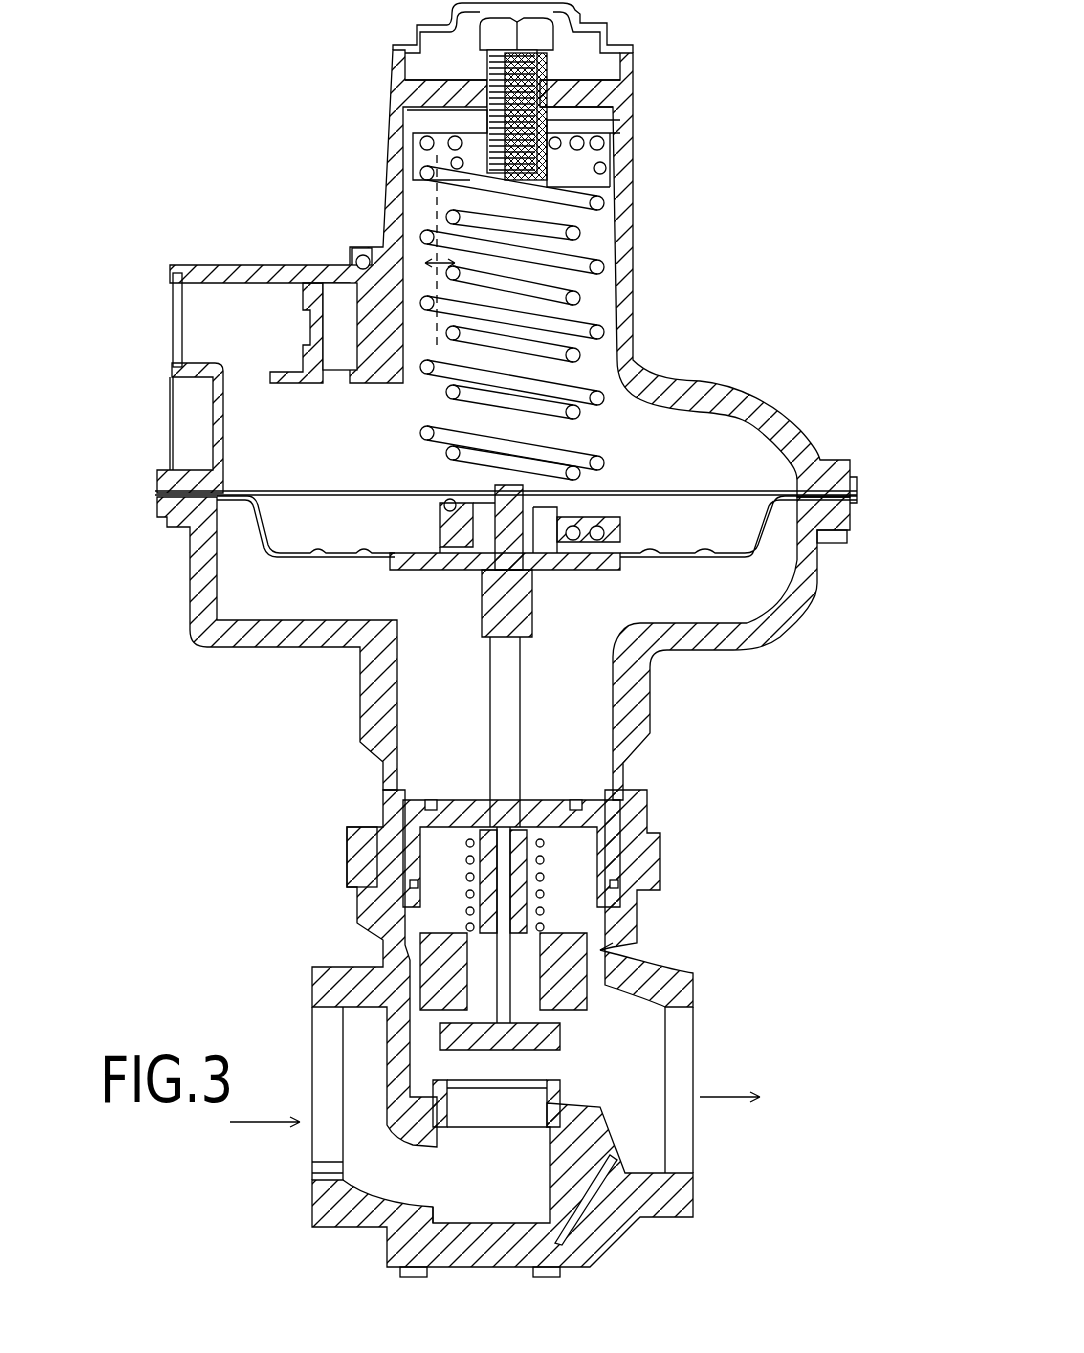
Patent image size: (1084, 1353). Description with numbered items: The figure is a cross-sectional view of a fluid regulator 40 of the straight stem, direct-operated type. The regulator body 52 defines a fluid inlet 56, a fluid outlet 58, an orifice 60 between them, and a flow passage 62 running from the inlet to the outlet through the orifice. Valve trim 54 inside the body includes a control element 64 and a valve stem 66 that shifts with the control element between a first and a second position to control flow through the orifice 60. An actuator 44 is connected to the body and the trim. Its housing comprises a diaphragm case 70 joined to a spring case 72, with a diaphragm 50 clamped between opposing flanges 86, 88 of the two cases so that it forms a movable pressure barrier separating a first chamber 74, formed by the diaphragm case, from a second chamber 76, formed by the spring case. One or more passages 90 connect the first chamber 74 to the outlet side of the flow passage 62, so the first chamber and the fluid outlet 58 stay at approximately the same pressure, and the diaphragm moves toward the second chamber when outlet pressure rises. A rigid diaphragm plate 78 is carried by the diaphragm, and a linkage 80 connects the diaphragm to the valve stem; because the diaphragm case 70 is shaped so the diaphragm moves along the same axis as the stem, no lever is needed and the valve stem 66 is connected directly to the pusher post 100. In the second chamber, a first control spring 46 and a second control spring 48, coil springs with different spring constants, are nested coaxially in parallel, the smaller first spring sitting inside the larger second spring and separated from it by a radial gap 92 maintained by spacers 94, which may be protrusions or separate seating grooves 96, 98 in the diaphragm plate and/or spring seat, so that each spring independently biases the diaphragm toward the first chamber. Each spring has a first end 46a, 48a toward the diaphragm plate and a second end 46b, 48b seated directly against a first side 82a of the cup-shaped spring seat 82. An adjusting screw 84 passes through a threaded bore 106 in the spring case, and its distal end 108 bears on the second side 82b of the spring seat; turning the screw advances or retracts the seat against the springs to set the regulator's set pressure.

The fluid regulator 40 is at (781, 83).
The actuator 44 is at (341, 807).
The first control spring 46 is at (600, 283).
The first end of first control spring 46a is at (600, 490).
The second end of first control spring 46b is at (610, 100).
The second control spring 48 is at (630, 315).
The first end of second control spring 48a is at (620, 510).
The second end of second control spring 48b is at (615, 160).
The diaphragm 50 is at (805, 560).
The regulator body 52 is at (600, 1225).
The valve trim 54 is at (410, 975).
The fluid inlet 56 is at (312, 1027).
The fluid outlet 58 is at (693, 1048).
The orifice 60 is at (540, 1085).
The flow passage 62 is at (520, 1180).
The control element 64 is at (560, 1030).
The valve stem 66 is at (620, 952).
The diaphragm case 70 is at (782, 638).
The spring case 72 is at (735, 381).
The first chamber 74 is at (450, 612).
The second chamber 76 is at (300, 436).
The diaphragm plate 78 is at (620, 527).
The linkage 80 is at (565, 679).
The spring seat 82 is at (407, 115).
The first side of spring seat 82a is at (520, 240).
The second side of spring seat 82b is at (617, 63).
The adjusting screw 84 is at (553, 33).
The flange of diaphragm case 86 is at (850, 530).
The flange of spring case 88 is at (850, 478).
The passages 90 is at (437, 810).
The gap 92 is at (375, 260).
The spacers 94 is at (420, 160).
The seating groove 96 is at (610, 88).
The seating groove 98 is at (633, 157).
The pusher post 100 is at (525, 600).
The bore 106 is at (407, 93).
The distal end of adjusting screw 108 is at (545, 180).